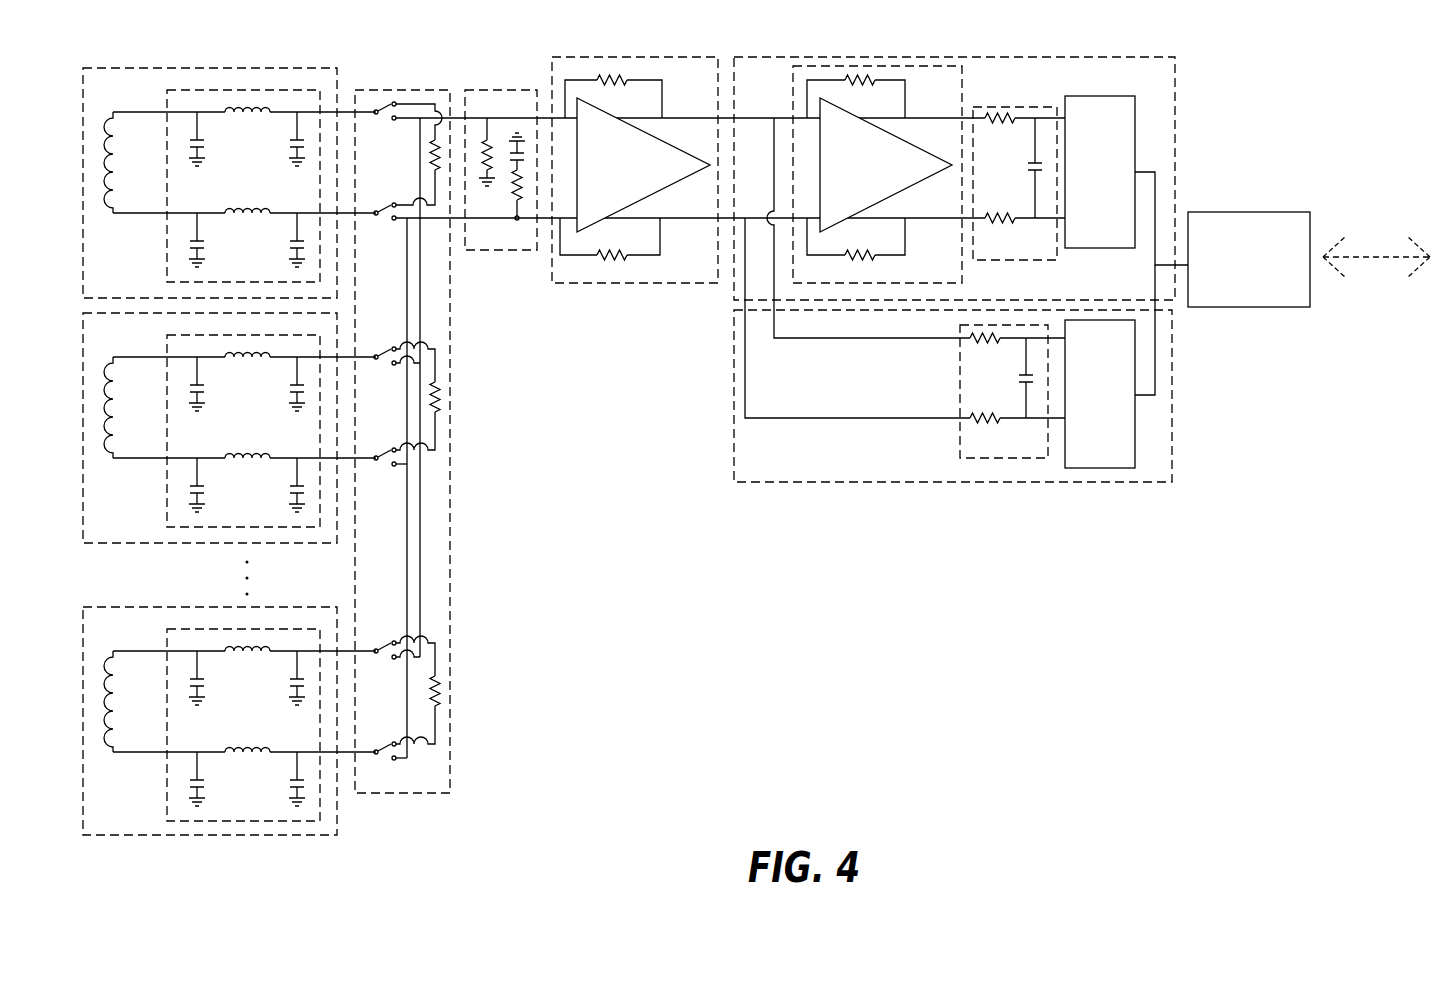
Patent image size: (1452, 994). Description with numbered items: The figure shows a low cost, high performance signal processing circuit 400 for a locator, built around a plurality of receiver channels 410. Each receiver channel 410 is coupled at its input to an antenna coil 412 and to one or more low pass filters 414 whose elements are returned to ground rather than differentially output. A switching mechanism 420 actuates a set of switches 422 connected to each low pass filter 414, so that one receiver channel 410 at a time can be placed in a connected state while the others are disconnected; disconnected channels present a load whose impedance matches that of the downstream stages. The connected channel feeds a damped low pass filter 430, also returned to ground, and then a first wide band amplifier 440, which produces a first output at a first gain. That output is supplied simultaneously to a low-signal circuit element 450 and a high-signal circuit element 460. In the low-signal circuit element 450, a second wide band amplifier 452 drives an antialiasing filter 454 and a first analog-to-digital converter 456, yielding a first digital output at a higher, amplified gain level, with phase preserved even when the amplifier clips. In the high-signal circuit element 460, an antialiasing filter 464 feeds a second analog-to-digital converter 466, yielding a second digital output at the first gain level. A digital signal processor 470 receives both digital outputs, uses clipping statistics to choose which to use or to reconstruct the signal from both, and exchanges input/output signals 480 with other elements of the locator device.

The signal processing circuit 400 is at (1334, 48).
The receiver channel 410 is at (210, 451).
The antenna coil 412 is at (115, 412).
The low pass filter 414 is at (244, 455).
The switching mechanism 420 is at (402, 441).
The switch 422 is at (405, 411).
The damped low pass filter 430 is at (501, 170).
The first wide band amplifier 440 is at (635, 170).
The low-signal circuit element 450 is at (954, 178).
The second wide band amplifier 452 is at (877, 174).
The antialiasing filter 454 is at (1015, 183).
The first analog-to-digital converter 456 is at (1126, 180).
The high-signal circuit element 460 is at (953, 300).
The antialiasing filter 464 is at (1012, 391).
The second analog-to-digital converter 466 is at (1110, 366).
The digital signal processor 470 is at (1249, 259).
The input/output signal 480 is at (1376, 306).